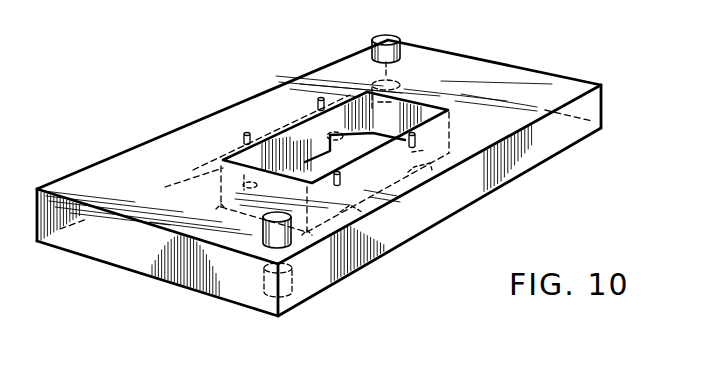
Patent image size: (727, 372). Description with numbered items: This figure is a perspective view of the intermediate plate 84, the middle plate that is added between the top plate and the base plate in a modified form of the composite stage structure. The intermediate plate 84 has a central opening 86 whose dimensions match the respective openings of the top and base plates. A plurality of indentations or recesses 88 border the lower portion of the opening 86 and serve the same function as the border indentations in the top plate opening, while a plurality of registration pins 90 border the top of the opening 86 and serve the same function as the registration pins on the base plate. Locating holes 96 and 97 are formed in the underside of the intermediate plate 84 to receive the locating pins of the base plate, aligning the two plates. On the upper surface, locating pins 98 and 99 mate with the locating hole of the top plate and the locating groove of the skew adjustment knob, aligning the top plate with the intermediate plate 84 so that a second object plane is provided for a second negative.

The intermediate plate 84 is at (627, 70).
The central opening 86 is at (451, 120).
The indentations or recesses 88 is at (200, 165).
The registration pins 90 is at (319, 98).
The locating hole 96 is at (293, 273).
The locating hole 97 is at (398, 84).
The locating pin 98 is at (263, 230).
The locating pin 99 is at (388, 32).